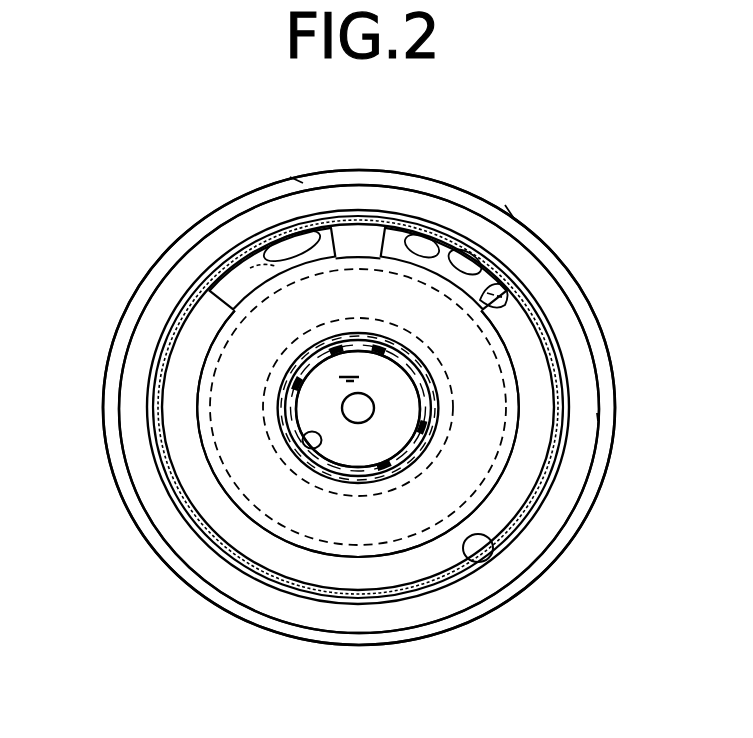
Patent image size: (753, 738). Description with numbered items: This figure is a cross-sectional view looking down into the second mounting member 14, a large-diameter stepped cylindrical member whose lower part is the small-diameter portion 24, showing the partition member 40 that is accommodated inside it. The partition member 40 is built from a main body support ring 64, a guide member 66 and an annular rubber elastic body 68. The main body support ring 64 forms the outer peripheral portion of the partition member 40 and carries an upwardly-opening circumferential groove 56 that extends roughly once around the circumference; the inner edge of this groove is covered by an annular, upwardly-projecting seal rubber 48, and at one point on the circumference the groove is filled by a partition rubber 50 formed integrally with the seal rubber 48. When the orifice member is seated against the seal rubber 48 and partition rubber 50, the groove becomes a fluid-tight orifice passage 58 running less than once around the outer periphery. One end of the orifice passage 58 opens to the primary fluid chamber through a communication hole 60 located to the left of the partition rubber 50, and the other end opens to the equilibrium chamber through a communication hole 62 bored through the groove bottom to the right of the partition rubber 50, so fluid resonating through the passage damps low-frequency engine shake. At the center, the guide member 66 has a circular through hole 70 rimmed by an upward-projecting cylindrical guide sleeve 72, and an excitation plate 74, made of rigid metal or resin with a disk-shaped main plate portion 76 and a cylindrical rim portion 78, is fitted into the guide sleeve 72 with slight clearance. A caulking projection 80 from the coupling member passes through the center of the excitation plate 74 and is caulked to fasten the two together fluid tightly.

The second mounting member 14 is at (577, 400).
The small-diameter portion 24 is at (359, 407).
The partition member 40 is at (173, 507).
The seal rubber 48 is at (498, 480).
The partition rubber 50 is at (355, 240).
The circumferential groove 56 is at (502, 557).
The orifice passage 58 is at (293, 560).
The communication hole 60 is at (250, 232).
The communication hole 62 is at (497, 253).
The main body support ring 64 is at (432, 600).
The guide member 66 is at (444, 382).
The annular rubber elastic body 68 is at (250, 358).
The through hole 70 is at (316, 468).
The guide sleeve 72 is at (283, 407).
The excitation plate 74 is at (362, 333).
The main plate portion 76 is at (368, 450).
The rim portion 78 is at (420, 449).
The caulking projection 80 is at (358, 418).